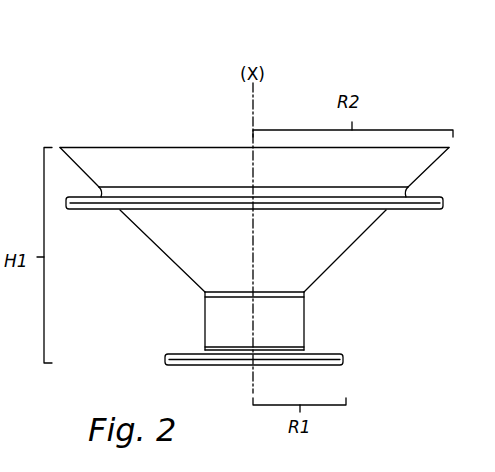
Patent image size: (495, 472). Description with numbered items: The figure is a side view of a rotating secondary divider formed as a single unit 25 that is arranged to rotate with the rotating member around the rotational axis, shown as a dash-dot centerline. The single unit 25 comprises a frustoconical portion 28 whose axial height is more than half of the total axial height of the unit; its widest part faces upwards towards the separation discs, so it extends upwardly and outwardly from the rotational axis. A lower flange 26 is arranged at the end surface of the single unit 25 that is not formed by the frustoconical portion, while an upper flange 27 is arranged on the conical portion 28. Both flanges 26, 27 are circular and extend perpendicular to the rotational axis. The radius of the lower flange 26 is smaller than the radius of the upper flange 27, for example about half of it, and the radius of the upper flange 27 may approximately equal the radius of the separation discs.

The single unit 25 is at (133, 118).
The lower flange 26 is at (345, 362).
The upper flange 27 is at (441, 207).
The frustoconical portion 28 is at (177, 257).